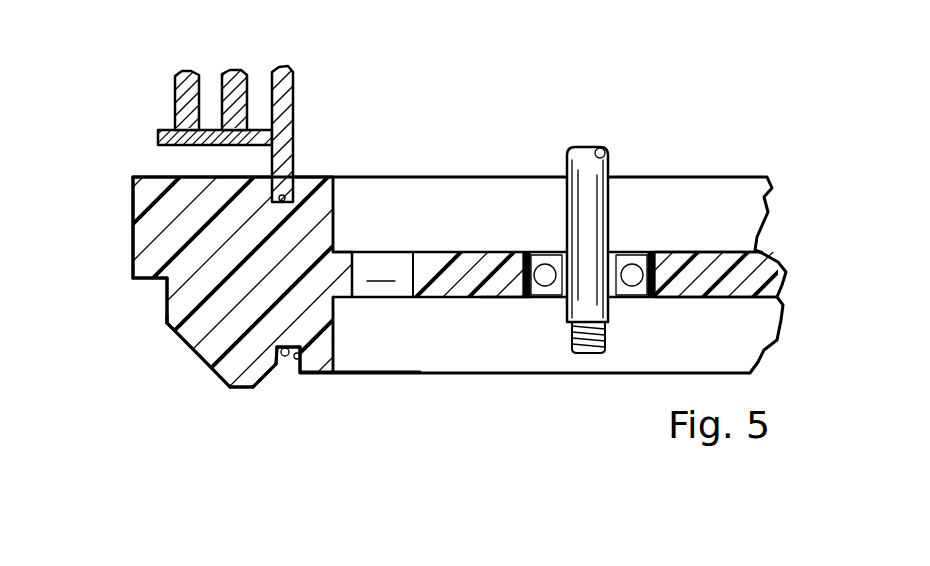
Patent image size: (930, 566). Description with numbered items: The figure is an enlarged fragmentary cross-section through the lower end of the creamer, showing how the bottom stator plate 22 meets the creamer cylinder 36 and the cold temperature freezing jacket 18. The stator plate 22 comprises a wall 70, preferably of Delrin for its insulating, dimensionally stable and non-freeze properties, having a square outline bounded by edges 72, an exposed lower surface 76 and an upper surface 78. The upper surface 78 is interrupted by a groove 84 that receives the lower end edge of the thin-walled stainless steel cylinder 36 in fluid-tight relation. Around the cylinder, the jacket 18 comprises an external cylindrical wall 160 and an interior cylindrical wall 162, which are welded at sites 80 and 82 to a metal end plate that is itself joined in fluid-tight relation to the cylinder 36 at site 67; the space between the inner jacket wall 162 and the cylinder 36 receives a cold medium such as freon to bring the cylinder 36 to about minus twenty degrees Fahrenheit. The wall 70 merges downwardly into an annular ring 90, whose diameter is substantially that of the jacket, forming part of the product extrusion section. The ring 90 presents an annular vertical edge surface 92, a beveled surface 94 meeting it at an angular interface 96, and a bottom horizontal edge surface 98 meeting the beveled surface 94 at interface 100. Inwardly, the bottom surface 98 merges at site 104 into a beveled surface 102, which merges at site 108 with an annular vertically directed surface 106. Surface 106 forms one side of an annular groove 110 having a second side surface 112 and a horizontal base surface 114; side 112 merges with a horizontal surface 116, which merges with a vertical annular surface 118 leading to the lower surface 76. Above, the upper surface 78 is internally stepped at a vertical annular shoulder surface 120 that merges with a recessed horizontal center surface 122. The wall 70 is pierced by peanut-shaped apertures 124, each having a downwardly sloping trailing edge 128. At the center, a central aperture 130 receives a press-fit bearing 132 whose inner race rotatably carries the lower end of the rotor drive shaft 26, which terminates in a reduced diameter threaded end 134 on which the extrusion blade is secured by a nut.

The cylindrical freezing jacket 18 is at (206, 288).
The bottom stator plate 22 is at (122, 172).
The drive shaft 26 is at (590, 212).
The creamer cylinder 36 is at (287, 132).
The site 67 is at (270, 161).
The wall 70 is at (510, 253).
The edges 72 is at (133, 243).
The exposed lower surface 76 is at (137, 283).
The upper surface 78 is at (158, 177).
The site 80 is at (175, 128).
The site 82 is at (208, 146).
The groove 84 is at (280, 200).
The annular ring 90 is at (213, 385).
The annular vertical edge surface 92 is at (167, 300).
The beveled surface 94 is at (190, 345).
The angular interface 96 is at (167, 327).
The bottom horizontal edge surface 98 is at (253, 388).
The angular interface 100 is at (223, 390).
The beveled surface 102 is at (270, 384).
The annular interface site 104 is at (260, 388).
The annular vertically-directed surface 106 is at (281, 364).
The site 108 is at (295, 360).
The annular groove 110 is at (287, 356).
The second side surface 112 is at (333, 353).
The horizontal base surface 114 is at (300, 257).
The horizontal surface 116 is at (322, 373).
The vertical annular surface 118 is at (333, 337).
The annular shoulder surface 120 is at (333, 193).
The recessed horizontal center surface 122 is at (470, 253).
The peanut-shaped apertures 124 is at (410, 256).
The trailing edge 128 is at (382, 274).
The central aperture 130 is at (647, 297).
The bearing 132 is at (640, 253).
The threaded end 134 is at (590, 353).
The external cylindrical wall 160 is at (183, 72).
The interior cylindrical wall 162 is at (232, 70).